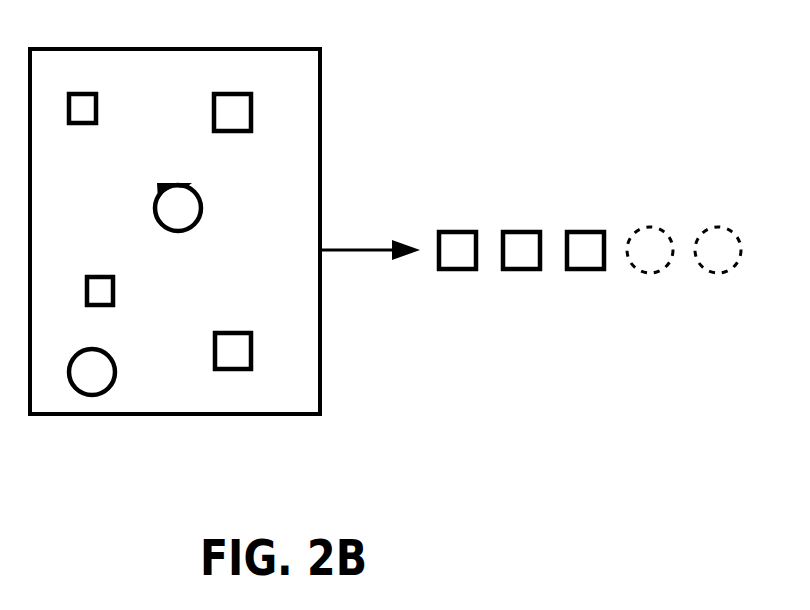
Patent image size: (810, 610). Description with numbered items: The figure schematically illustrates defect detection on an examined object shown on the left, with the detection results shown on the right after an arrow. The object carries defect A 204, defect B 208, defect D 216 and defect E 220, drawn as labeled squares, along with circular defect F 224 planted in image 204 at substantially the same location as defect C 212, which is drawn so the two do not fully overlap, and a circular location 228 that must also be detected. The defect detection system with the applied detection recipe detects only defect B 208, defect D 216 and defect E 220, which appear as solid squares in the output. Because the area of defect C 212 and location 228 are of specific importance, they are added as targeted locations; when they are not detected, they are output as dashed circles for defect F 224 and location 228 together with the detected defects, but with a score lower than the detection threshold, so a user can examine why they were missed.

The defect A / image 204 is at (99, 103).
The defect B 208 is at (254, 103).
The defect C 212 is at (160, 187).
The defect D 216 is at (116, 285).
The defect E 220 is at (254, 342).
The defect F 224 is at (201, 204).
The location 228 is at (112, 362).